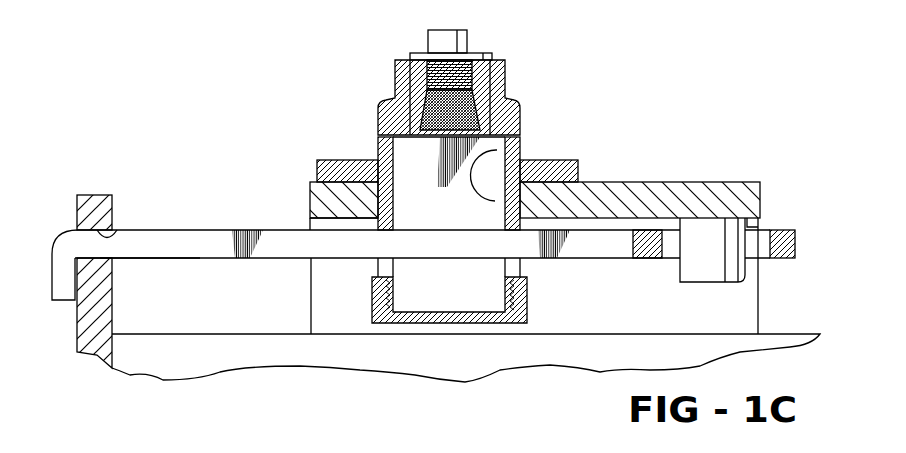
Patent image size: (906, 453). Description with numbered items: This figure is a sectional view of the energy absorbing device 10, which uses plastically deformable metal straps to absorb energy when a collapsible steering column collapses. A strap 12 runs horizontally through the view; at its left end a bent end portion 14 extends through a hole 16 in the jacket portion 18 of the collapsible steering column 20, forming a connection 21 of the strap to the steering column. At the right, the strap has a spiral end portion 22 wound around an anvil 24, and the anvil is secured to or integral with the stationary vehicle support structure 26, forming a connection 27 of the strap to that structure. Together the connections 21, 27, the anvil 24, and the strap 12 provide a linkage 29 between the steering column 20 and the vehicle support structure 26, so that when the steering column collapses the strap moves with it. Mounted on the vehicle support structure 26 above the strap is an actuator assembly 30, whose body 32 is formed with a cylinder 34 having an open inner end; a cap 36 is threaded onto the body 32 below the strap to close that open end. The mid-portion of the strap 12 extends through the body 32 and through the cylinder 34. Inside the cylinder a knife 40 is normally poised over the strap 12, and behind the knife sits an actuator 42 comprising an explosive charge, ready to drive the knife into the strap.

The energy absorbing device 10 is at (651, 120).
The metal strap 12 is at (211, 230).
The bent end portion 14 is at (55, 279).
The hole 16 is at (113, 237).
The jacket portion 18 is at (77, 337).
The collapsible steering column 20 is at (76, 196).
The connection 21 is at (116, 261).
The spiral end portion 22 is at (795, 243).
The anvil 24 is at (712, 270).
The stationary vehicle support structure 26 is at (722, 182).
The connection 27 is at (760, 227).
The linkage 29 is at (248, 272).
The actuator assembly 30 is at (482, 73).
The body 32 is at (383, 146).
The cylinder 34 is at (395, 213).
The cap 36 is at (503, 323).
The knife 40 is at (405, 160).
The actuator 42 is at (505, 83).